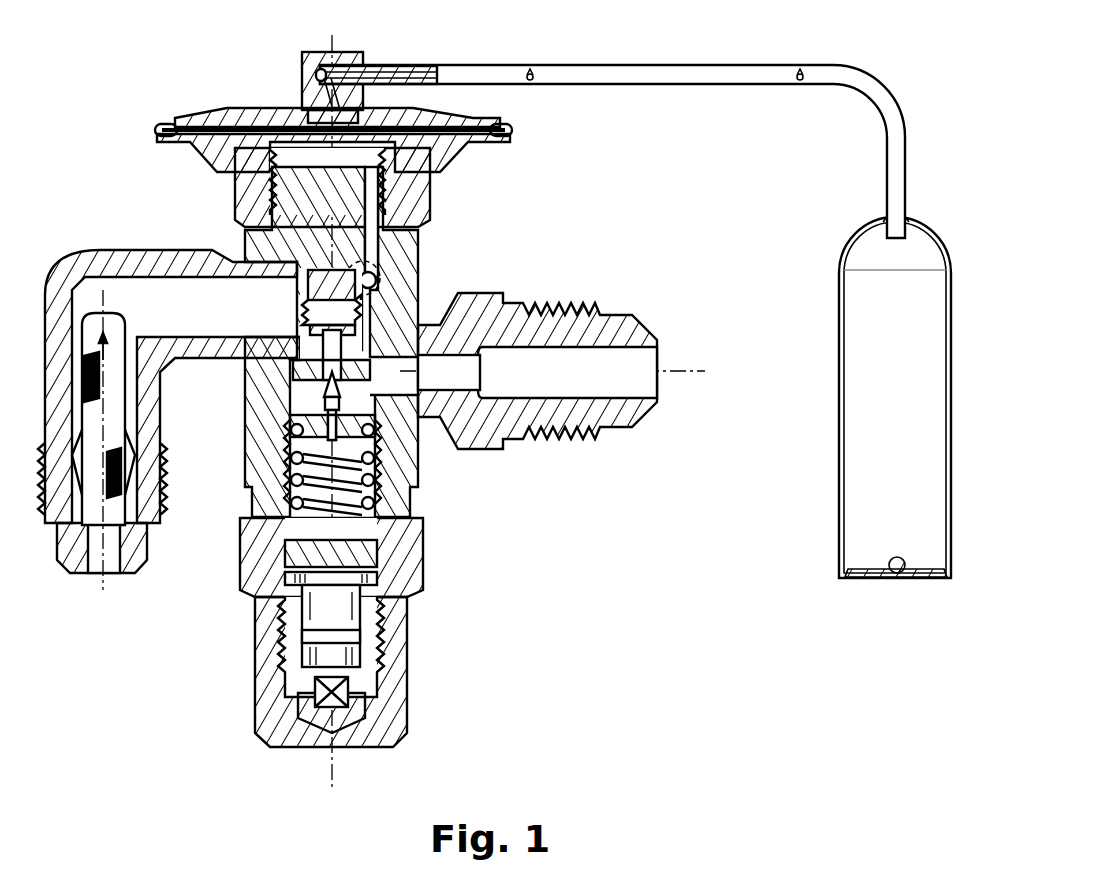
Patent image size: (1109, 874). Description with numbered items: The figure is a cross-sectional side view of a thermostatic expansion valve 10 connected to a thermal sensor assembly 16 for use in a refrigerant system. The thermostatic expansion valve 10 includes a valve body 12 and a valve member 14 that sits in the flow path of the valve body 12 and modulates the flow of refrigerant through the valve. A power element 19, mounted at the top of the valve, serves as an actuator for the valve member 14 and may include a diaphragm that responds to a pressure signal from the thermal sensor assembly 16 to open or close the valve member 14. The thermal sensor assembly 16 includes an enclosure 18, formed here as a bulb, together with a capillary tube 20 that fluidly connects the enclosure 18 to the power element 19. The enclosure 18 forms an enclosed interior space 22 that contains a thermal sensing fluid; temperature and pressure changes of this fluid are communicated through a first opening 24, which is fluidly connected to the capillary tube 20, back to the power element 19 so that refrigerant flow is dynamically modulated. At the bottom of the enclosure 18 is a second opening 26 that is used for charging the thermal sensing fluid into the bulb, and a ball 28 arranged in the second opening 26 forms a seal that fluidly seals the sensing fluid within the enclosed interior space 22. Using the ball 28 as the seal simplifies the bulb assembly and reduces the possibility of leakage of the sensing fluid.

The thermostatic expansion valve 10 is at (104, 100).
The valve body 12 is at (400, 268).
The valve member 14 is at (322, 402).
The thermal sensor assembly 16 is at (920, 104).
The enclosure 18 is at (826, 428).
The power element 19 is at (215, 163).
The capillary tube 20 is at (680, 77).
The enclosed interior space 22 is at (885, 345).
The first opening 24 is at (893, 225).
The second opening 26 is at (898, 578).
The ball 28 is at (893, 558).